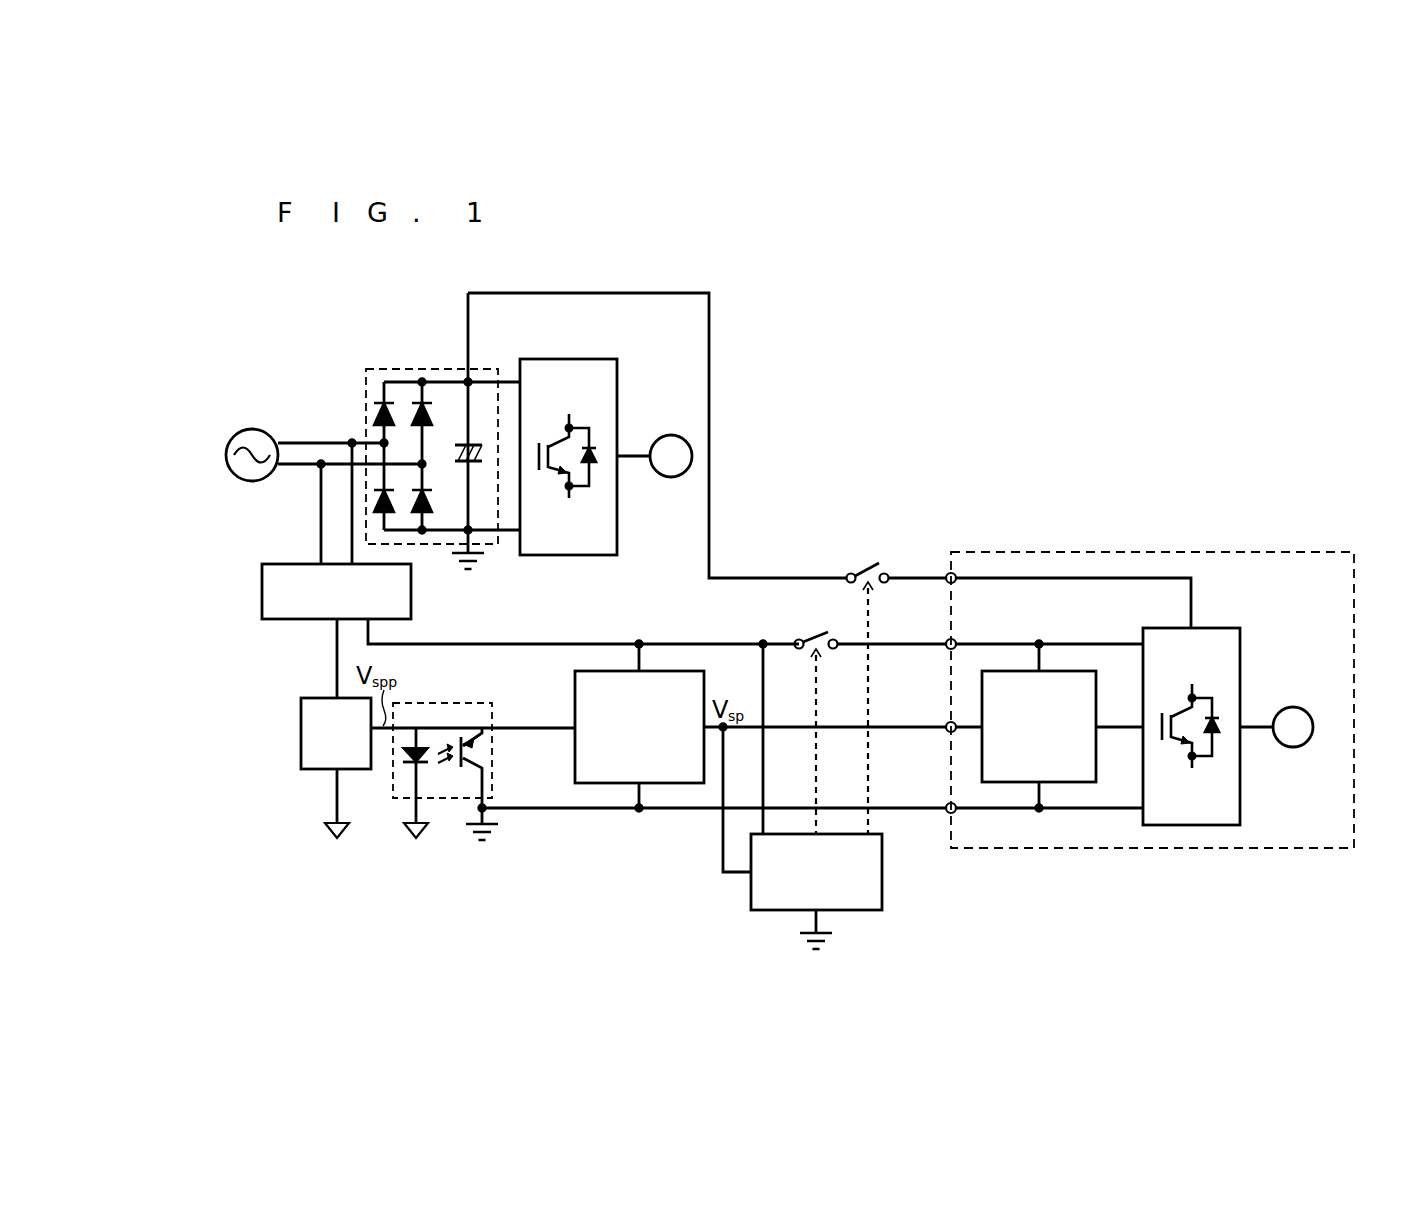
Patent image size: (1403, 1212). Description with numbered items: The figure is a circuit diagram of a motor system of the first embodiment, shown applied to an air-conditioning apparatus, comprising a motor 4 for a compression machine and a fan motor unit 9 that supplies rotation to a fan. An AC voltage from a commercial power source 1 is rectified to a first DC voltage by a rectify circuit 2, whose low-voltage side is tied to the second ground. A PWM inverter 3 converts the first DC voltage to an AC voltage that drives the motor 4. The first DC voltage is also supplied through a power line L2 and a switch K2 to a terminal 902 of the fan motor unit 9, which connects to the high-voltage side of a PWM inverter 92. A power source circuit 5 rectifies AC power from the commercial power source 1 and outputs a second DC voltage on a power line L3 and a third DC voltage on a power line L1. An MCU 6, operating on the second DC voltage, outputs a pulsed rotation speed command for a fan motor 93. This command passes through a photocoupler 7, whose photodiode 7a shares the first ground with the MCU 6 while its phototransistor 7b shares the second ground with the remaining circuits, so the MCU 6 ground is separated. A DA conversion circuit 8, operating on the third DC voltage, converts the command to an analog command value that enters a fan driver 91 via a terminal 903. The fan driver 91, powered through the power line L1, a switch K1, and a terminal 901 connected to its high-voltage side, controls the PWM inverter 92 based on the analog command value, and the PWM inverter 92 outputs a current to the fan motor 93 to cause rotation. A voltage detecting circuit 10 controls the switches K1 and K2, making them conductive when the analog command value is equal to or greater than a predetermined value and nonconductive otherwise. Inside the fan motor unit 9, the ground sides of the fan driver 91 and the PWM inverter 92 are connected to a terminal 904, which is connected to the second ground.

The commercial power source 1 is at (252, 429).
The rectify circuit 2 is at (405, 366).
The PWM inverter 3 is at (570, 358).
The motor for a compression machine 4 is at (672, 434).
The power source circuit 5 is at (293, 563).
The MCU 6 is at (318, 697).
The photocoupler 7 is at (453, 756).
The photodiode 7a is at (405, 758).
The phototransistor 7b is at (478, 752).
The DA conversion circuit 8 is at (575, 685).
The fan motor unit 9 is at (1160, 552).
The voltage detecting circuit 10 is at (852, 912).
The fan driver 91 is at (1083, 668).
The PWM inverter 92 is at (1218, 627).
The fan motor 93 is at (1293, 748).
The terminal 901 is at (946, 650).
The terminal 902 is at (946, 582).
The terminal 903 is at (946, 732).
The terminal 904 is at (949, 813).
The power line L1 is at (517, 644).
The power line L2 is at (709, 437).
The power line L3 is at (337, 638).
The switch K1 is at (810, 632).
The switch K2 is at (866, 565).